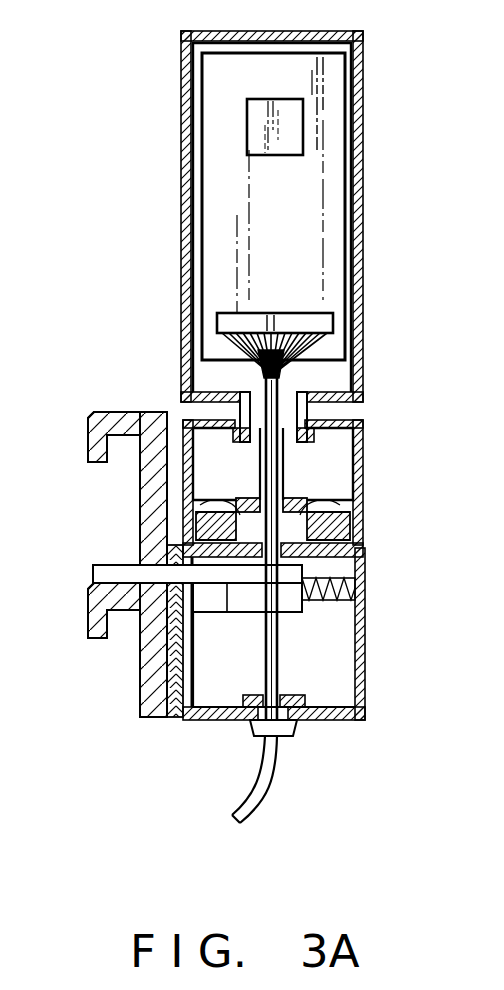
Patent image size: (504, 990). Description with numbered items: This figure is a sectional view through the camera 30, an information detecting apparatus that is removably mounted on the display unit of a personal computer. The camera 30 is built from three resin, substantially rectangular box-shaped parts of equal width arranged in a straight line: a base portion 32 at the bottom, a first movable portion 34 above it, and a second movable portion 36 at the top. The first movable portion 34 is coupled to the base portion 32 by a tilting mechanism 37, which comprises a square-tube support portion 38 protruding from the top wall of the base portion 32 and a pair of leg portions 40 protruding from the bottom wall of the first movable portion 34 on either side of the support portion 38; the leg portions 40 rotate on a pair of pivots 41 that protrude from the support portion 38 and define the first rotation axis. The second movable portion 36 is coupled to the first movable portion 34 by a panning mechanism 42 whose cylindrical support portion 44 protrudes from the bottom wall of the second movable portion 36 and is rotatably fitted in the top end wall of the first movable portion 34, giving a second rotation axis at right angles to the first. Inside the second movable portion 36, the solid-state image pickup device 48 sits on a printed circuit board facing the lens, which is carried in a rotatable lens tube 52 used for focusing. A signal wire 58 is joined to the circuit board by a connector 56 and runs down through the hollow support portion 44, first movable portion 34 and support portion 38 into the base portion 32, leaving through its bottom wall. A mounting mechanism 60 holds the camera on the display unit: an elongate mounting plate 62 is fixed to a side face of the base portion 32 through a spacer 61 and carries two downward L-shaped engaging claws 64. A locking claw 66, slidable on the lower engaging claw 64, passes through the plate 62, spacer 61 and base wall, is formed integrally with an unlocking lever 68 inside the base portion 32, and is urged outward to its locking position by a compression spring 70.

The camera 30 is at (167, 97).
The base portion 32 is at (362, 700).
The first movable portion 34 is at (356, 447).
The second movable portion 36 is at (358, 239).
The tilting mechanism 37 is at (290, 529).
The support portion 38 is at (290, 505).
The leg portions 40 is at (357, 528).
The pivots 41 is at (240, 527).
The panning mechanism 42 is at (225, 382).
The cylindrical support portion 44 is at (302, 412).
The solid-state image pickup device 48 is at (300, 134).
The lens tube 52 is at (215, 237).
The connector 56 is at (217, 324).
The signal wire 58 is at (280, 645).
The mounting mechanism 60 is at (119, 592).
The spacer 61 is at (180, 720).
The mounting plate 62 is at (152, 720).
The engaging claws 64 is at (90, 438).
The locking claw 66 is at (112, 572).
The unlocking lever 68 is at (243, 603).
The compression spring 70 is at (336, 603).